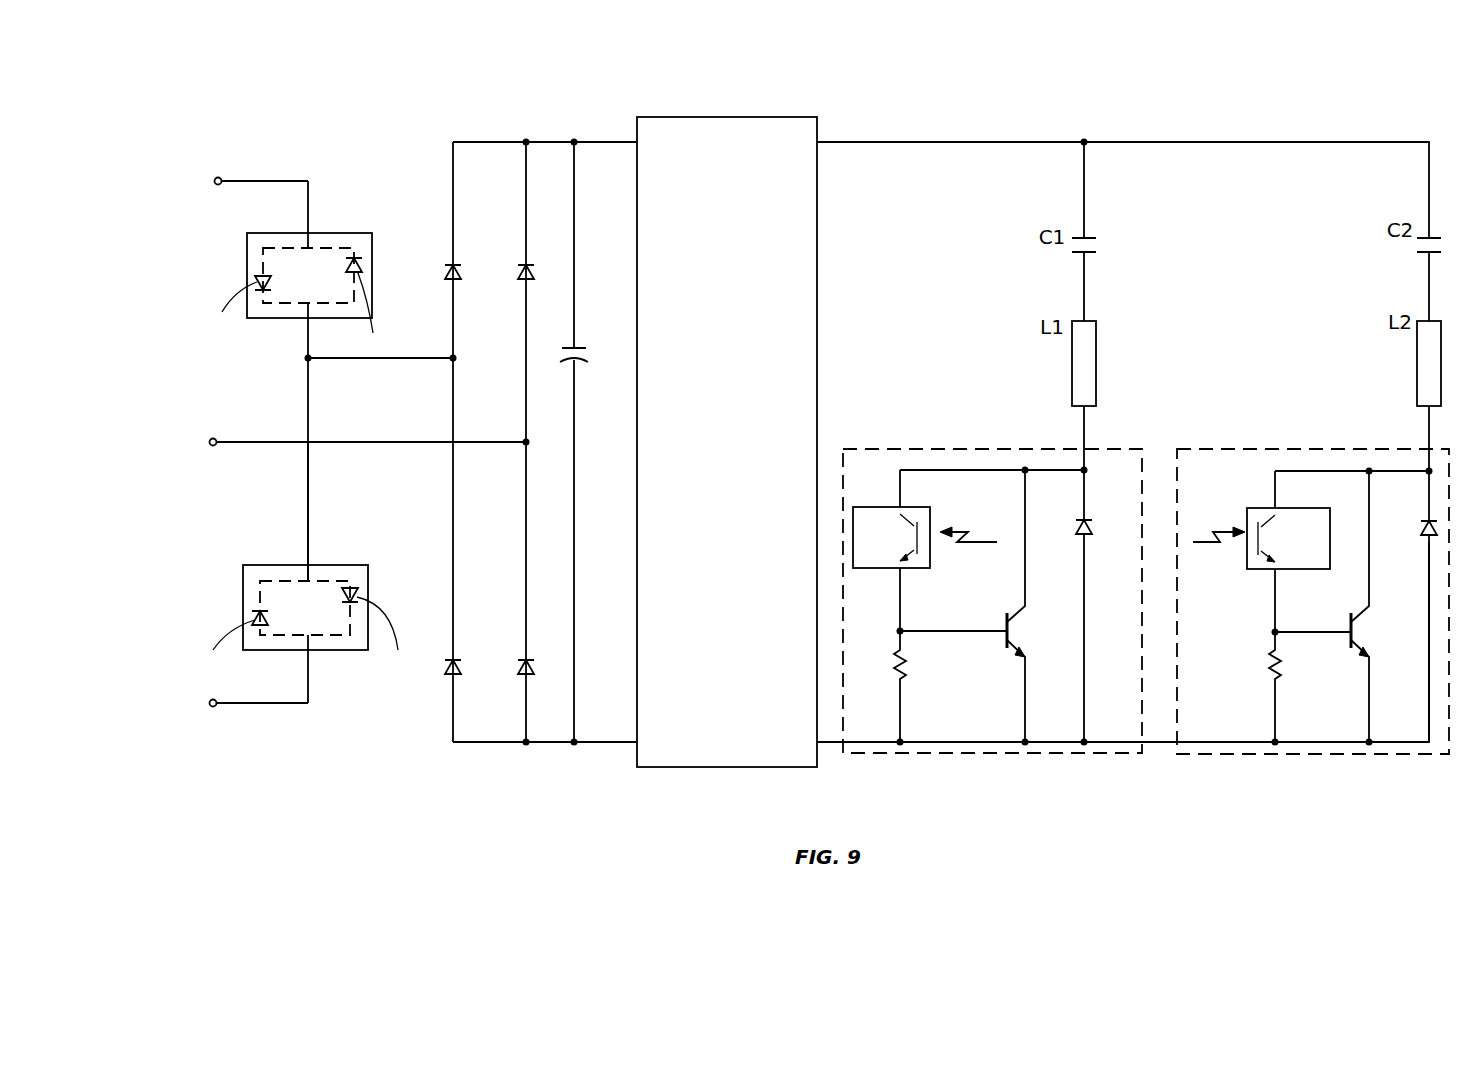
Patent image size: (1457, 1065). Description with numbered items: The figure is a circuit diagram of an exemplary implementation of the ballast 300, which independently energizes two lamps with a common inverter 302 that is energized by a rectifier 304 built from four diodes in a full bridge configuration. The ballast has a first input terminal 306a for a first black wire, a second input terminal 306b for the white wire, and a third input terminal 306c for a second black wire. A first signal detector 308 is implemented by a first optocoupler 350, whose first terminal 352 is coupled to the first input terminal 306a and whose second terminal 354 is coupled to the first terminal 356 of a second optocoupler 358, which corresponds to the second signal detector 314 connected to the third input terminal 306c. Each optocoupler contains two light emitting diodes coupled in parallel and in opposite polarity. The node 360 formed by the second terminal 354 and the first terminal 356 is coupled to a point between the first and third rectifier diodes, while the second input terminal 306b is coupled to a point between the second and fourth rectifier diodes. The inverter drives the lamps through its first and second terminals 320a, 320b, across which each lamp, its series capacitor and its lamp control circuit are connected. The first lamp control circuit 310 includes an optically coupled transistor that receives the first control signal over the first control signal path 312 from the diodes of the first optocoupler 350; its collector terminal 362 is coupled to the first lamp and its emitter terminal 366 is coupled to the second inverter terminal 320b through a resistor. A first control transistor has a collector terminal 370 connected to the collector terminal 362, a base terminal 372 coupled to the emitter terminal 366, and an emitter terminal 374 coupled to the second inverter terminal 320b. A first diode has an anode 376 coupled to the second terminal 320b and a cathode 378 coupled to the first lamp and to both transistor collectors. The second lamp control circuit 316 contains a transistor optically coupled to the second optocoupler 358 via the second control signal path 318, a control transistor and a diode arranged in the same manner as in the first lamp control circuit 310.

The ballast 300 is at (852, 126).
The inverter 302 is at (727, 442).
The rectifier 304 is at (507, 442).
The first input terminal 306a is at (214, 184).
The second input terminal 306b is at (210, 445).
The third input terminal 306c is at (210, 706).
The first signal detector 308 is at (303, 358).
The first lamp control circuit 310 is at (917, 447).
The first control signal path 312 is at (982, 543).
The second signal detector 314 is at (299, 572).
The second lamp control circuit 316 is at (1262, 446).
The second control signal path 318 is at (1215, 547).
The first terminal of the inverter 320a is at (927, 142).
The second terminal of the inverter 320b is at (830, 742).
The first optocoupler 350 is at (303, 299).
The first terminal of the first optocoupler 352 is at (310, 208).
The second terminal of the first optocoupler 354 is at (307, 323).
The first terminal of the second optocoupler 356 is at (310, 538).
The second optocoupler 358 is at (299, 629).
The node 360 is at (457, 353).
The collector terminal 362 is at (902, 485).
The emitter terminal 366 is at (902, 595).
The collector terminal 370 is at (1027, 595).
The base terminal 372 is at (957, 630).
The emitter terminal 374 is at (1025, 670).
The anode 376 is at (1084, 560).
The cathode 378 is at (1084, 497).